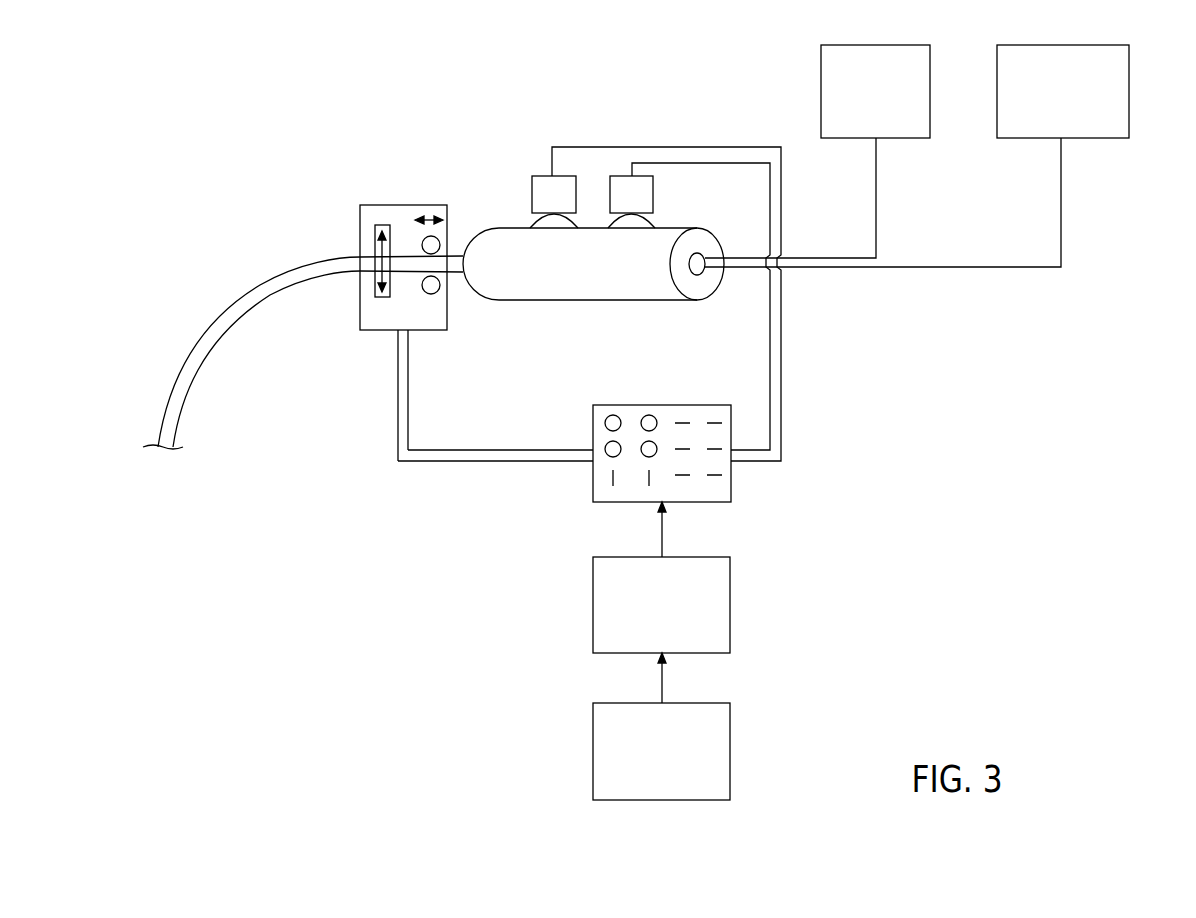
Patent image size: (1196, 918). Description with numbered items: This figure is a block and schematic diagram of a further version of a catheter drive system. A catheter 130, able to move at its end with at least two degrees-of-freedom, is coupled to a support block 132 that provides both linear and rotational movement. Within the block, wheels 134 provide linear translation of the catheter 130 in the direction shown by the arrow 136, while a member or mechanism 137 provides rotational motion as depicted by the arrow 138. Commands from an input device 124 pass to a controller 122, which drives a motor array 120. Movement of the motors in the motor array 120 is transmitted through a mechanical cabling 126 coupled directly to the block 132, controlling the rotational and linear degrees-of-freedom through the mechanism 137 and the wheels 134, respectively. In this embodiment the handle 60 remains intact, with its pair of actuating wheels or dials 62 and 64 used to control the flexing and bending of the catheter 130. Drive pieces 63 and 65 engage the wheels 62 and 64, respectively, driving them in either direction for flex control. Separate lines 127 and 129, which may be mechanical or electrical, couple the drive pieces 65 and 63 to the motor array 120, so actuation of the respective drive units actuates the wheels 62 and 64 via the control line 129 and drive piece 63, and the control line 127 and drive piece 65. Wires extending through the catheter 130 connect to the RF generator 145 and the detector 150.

The handle 60 is at (590, 300).
The actuating wheel 62 is at (530, 226).
The drive piece 63 is at (546, 176).
The actuating wheel 64 is at (655, 225).
The drive piece 65 is at (655, 186).
The motor array 120 is at (731, 476).
The controller 122 is at (731, 622).
The input device 124 is at (731, 750).
The mechanical cabling 126 is at (398, 410).
The control line 127 is at (770, 333).
The control line 129 is at (781, 333).
The catheter 130 is at (240, 312).
The support block 132 is at (413, 200).
The wheels 134 is at (442, 240).
The direction of linear translation 136 is at (429, 218).
The rotational mechanism 137 is at (380, 298).
The arrow indicating rotational motion 138 is at (377, 253).
The RF generator 145 is at (821, 72).
The detector 150 is at (1129, 72).